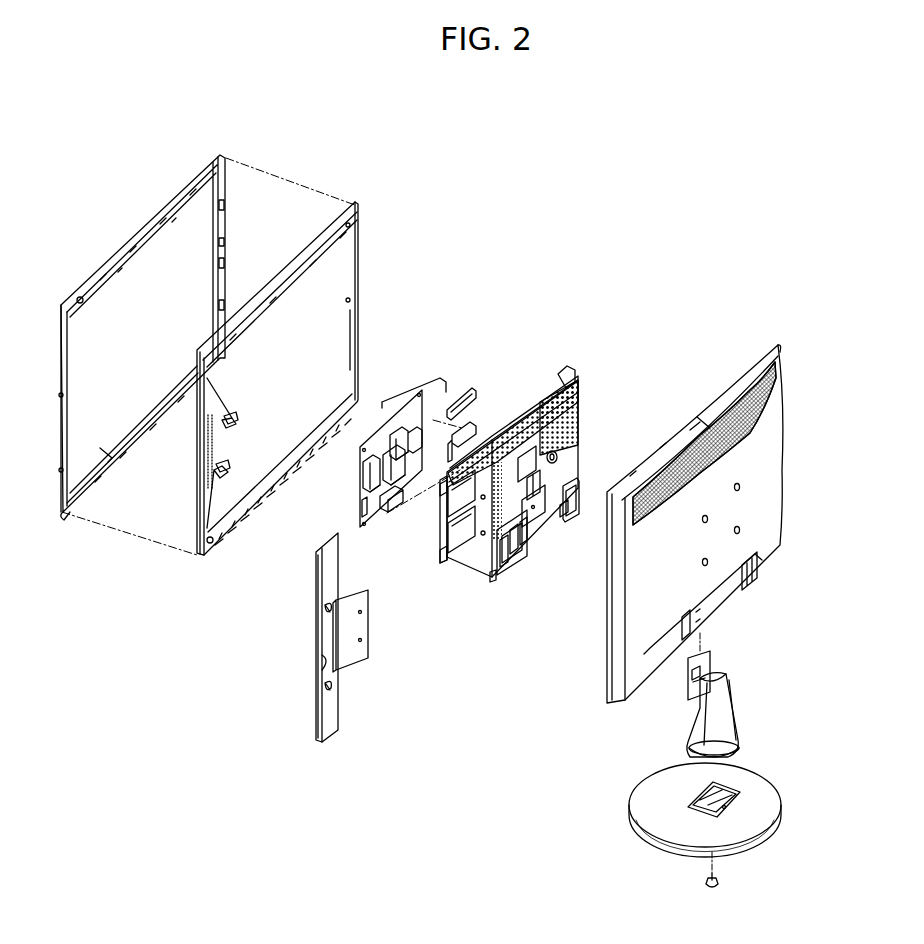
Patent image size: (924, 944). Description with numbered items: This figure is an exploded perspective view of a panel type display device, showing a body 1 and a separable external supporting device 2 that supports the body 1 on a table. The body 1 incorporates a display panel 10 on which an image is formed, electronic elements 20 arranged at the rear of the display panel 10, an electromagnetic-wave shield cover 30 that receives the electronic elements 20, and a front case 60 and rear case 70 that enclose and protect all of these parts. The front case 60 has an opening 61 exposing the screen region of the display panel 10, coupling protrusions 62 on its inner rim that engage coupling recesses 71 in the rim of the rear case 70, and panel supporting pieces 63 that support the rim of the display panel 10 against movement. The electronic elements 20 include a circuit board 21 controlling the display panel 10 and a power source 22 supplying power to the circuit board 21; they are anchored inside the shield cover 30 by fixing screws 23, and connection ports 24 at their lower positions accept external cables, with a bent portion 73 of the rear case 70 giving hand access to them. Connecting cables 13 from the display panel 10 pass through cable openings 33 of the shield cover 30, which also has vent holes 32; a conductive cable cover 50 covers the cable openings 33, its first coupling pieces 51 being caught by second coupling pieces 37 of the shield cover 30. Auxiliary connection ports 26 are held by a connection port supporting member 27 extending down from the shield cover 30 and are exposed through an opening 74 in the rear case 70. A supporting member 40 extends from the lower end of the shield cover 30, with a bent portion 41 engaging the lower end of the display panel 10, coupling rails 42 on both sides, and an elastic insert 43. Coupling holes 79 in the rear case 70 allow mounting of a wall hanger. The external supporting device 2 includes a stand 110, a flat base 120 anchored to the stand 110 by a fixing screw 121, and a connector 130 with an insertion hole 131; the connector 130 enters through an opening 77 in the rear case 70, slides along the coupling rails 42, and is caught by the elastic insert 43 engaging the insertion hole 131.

The body 1 is at (555, 235).
The external supporting device 2 is at (868, 620).
The display panel 10 is at (356, 206).
The connecting cables 13 is at (230, 466).
The electronic elements 20 is at (450, 362).
The circuit board 21 is at (359, 456).
The power source 22 is at (470, 392).
The fixing screws 23 is at (382, 402).
The connection ports 24 is at (472, 428).
The auxiliary connection ports 26 is at (576, 496).
The connection port supporting member 27 is at (565, 512).
The electromagnetic-wave shield cover 30 is at (583, 370).
The vent holes 32 is at (565, 376).
The cable openings 33 is at (470, 548).
The second coupling pieces 37 is at (443, 489).
The supporting member 40 is at (495, 578).
The bent portion 41 is at (492, 578).
The coupling rails 42 is at (528, 532).
The elastic insert 43 is at (518, 548).
The cable cover 50 is at (320, 645).
The first coupling pieces 51 is at (327, 609).
The front case 60 is at (222, 156).
The opening 61 is at (96, 450).
The coupling protrusions 62 is at (226, 263).
The panel supporting pieces 63 is at (226, 240).
The rear case 70 is at (720, 511).
The coupling recesses 71 is at (712, 400).
The bent portion 73 is at (730, 582).
The opening 74 is at (754, 567).
The opening 77 is at (706, 627).
The coupling holes 79 is at (710, 517).
The stand 110 is at (690, 735).
The base 120 is at (655, 822).
The fixing screw 121 is at (719, 883).
The connector 130 is at (712, 662).
The insertion hole 131 is at (696, 682).